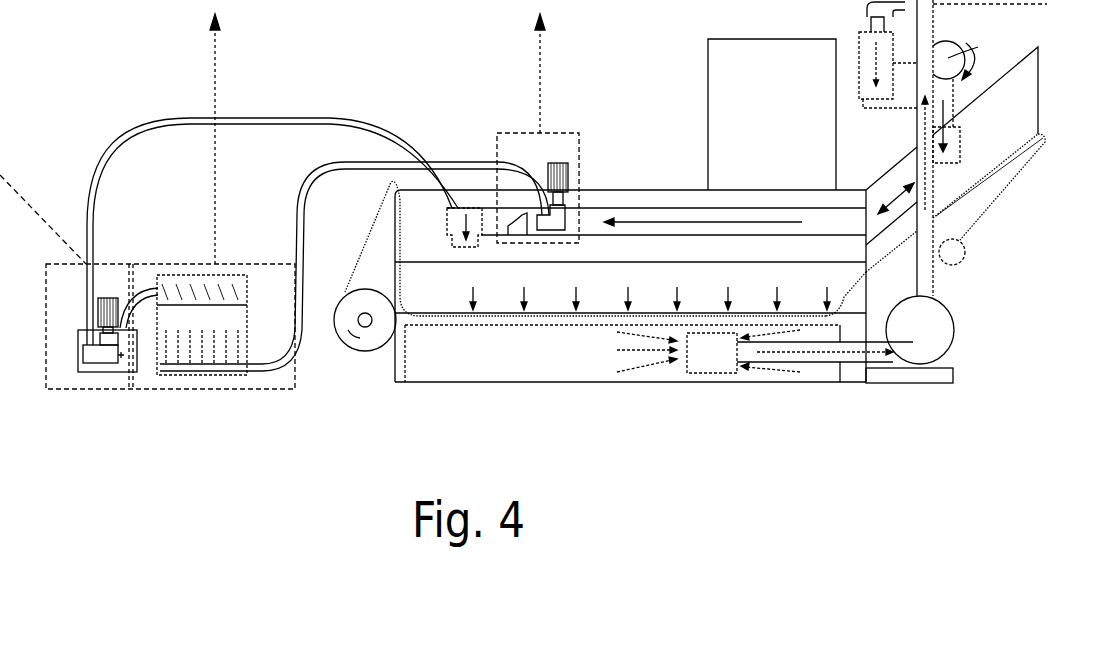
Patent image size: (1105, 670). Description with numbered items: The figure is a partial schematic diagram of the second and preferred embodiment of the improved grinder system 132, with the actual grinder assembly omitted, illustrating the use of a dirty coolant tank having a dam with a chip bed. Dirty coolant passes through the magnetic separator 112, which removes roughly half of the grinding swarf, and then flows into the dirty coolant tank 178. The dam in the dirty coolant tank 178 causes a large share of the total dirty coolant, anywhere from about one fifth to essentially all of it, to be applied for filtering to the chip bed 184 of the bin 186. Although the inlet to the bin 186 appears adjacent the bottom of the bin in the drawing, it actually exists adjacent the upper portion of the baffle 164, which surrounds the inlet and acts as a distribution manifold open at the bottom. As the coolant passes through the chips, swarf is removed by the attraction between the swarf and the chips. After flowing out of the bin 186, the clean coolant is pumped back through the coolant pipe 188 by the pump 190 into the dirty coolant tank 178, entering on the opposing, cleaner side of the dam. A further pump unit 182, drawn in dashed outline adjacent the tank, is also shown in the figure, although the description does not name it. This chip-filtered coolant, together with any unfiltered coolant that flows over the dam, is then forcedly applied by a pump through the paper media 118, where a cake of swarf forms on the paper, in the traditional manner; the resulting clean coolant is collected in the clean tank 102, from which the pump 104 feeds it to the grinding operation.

The clean tank 102 is at (771, 383).
The pump 104 is at (948, 330).
The magnetic separator 112 is at (990, 40).
The paper media 118 is at (1010, 188).
The grinder system 132 is at (290, 422).
The baffle 164 is at (160, 365).
The dirty coolant tank 178 is at (663, 208).
The pump unit 182 is at (460, 160).
The chip bed 184 is at (207, 353).
The bin 186 is at (252, 236).
The coolant pipe 188 is at (258, 120).
The pump 190 is at (92, 372).